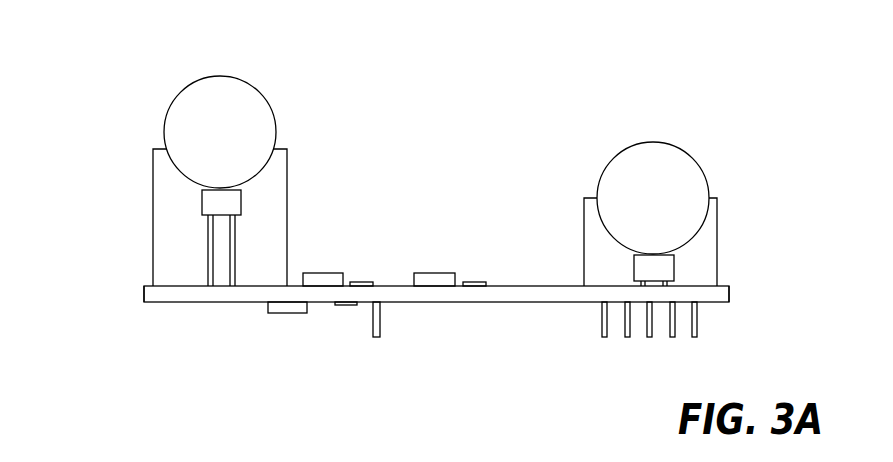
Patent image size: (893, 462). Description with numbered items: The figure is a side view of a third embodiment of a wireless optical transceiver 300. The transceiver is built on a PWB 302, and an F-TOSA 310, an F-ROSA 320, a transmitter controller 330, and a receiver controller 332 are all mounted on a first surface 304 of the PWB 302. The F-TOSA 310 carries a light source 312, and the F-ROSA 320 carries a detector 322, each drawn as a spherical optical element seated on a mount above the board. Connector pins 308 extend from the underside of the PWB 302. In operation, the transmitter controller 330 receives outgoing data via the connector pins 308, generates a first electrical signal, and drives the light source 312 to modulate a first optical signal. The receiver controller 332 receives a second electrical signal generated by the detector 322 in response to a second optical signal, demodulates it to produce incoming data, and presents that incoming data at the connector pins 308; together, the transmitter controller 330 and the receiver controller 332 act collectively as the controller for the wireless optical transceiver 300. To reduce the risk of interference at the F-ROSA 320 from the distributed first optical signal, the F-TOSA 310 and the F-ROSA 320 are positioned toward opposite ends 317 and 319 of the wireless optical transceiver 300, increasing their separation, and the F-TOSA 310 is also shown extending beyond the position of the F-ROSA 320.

The wireless optical transceiver 300 is at (72, 72).
The PWB 302 is at (497, 294).
The first surface 304 is at (723, 285).
The connector pins 308 is at (626, 337).
The F-TOSA 310 is at (272, 84).
The light source 312 is at (202, 205).
The end of the wireless optical transceiver 317 is at (146, 303).
The end of the wireless optical transceiver 319 is at (727, 304).
The F-ROSA 320 is at (686, 133).
The detector 322 is at (634, 272).
The transmitter controller 330 is at (322, 273).
The receiver controller 332 is at (430, 273).